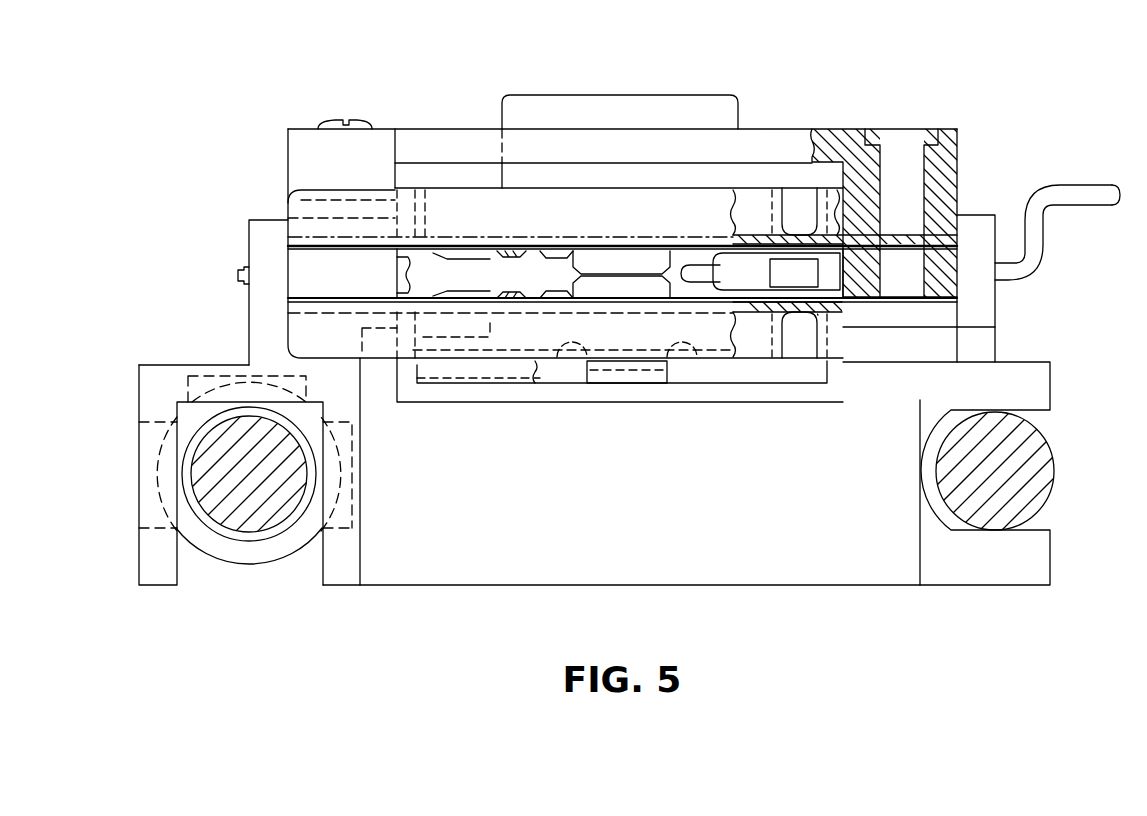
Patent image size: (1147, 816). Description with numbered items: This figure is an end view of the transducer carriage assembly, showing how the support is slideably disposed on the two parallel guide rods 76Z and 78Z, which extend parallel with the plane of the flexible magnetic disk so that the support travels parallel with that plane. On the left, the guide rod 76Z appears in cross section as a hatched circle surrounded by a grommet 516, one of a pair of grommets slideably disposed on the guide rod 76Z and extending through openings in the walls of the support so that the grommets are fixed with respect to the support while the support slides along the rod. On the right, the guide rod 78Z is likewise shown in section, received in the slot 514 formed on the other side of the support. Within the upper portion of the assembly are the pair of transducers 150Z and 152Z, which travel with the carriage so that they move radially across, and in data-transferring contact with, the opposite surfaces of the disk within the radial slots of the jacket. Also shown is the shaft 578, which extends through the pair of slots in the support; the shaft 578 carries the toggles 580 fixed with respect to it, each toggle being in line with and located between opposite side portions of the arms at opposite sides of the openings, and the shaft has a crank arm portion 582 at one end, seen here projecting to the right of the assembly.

The transducer 150Z is at (628, 262).
The transducer 152Z is at (625, 283).
The shaft 578 is at (238, 272).
The toggle 580 is at (803, 268).
The crank arm portion 582 is at (1082, 185).
The guide rod 78Z is at (1043, 443).
The slot 514 is at (1038, 527).
The grommet 516 is at (220, 548).
The guide rod 76Z is at (268, 515).